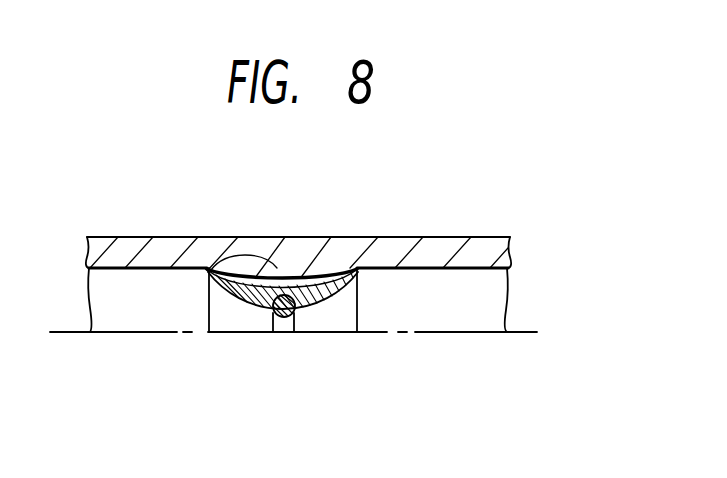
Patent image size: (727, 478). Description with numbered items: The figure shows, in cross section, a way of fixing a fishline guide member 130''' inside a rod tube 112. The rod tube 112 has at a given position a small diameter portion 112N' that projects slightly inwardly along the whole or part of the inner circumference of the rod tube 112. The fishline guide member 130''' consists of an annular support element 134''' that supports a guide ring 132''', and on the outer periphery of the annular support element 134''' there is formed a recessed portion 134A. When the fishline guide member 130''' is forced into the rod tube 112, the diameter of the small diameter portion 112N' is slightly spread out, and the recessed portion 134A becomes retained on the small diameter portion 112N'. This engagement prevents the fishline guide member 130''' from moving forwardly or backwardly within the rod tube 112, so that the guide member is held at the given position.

The rod tube 112 is at (439, 254).
The small diameter portion 112N' is at (282, 225).
The annular support element 134''' is at (295, 334).
The guide ring 132''' is at (278, 347).
The fishline guide member 130''' is at (313, 420).
The recessed portion 134A is at (208, 270).